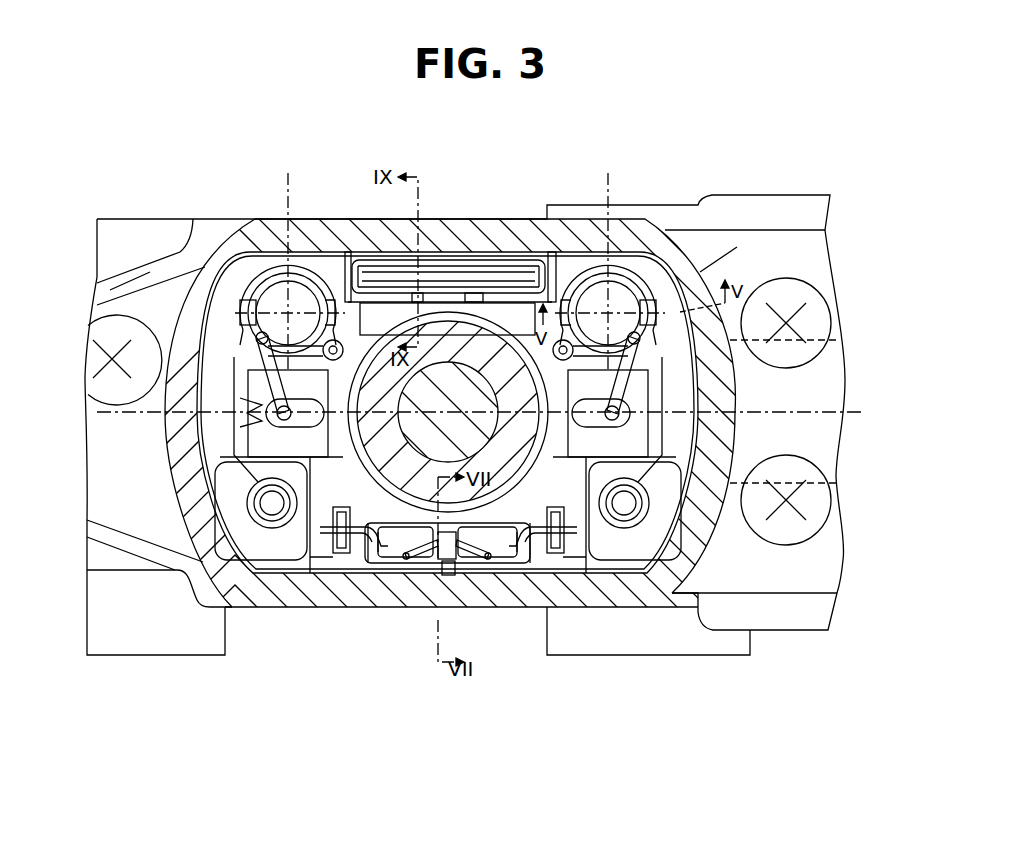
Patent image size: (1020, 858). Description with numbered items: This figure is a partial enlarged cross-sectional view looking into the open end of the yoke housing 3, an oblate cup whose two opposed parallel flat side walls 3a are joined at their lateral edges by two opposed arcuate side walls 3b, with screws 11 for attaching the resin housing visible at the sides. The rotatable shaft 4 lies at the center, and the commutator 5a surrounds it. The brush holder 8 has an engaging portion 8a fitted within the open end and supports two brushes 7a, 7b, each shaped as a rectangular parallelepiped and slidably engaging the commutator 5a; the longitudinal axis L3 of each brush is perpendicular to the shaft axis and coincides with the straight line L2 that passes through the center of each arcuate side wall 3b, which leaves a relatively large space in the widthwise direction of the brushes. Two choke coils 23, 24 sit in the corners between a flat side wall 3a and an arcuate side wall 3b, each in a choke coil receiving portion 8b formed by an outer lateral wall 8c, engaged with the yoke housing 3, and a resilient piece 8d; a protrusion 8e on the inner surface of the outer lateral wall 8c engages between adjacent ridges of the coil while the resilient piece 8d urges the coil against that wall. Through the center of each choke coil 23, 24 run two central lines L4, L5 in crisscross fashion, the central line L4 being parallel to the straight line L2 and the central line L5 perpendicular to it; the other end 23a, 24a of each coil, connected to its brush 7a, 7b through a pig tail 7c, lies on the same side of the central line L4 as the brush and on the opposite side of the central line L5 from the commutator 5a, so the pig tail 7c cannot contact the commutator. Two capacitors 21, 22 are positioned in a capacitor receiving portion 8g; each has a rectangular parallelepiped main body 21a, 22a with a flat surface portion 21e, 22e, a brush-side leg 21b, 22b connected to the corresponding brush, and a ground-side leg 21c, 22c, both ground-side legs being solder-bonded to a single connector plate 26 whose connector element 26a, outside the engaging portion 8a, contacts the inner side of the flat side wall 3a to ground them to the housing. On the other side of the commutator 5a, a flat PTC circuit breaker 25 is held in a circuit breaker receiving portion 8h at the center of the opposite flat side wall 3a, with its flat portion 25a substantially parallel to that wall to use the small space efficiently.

The yoke housing 3 is at (780, 597).
The flat side wall 3a is at (255, 609).
The arcuate side wall 3b is at (175, 480).
The rotatable shaft 4 is at (456, 448).
The commutator 5a is at (437, 455).
The brush 7a is at (608, 428).
The brush 7b is at (284, 428).
The pig tail 7c is at (278, 378).
The brush holder 8 is at (630, 590).
The engaging portion 8a is at (320, 565).
The choke coil receiving portion 8b is at (292, 275).
The outer lateral wall 8c is at (258, 245).
The resilient piece 8d is at (335, 300).
The protrusion 8e is at (246, 277).
The capacitor receiving portion 8g is at (505, 563).
The circuit breaker receiving portion 8h is at (452, 265).
The screws 11 is at (122, 405).
The capacitor 21 is at (480, 570).
The main body 21a is at (520, 555).
The leg 21b is at (584, 532).
The leg 21c is at (470, 560).
The flat surface portion 21e is at (515, 525).
The capacitor 22 is at (420, 565).
The main body 22a is at (372, 556).
The leg 22b is at (322, 532).
The leg 22c is at (405, 560).
The flat surface portion 22e is at (385, 525).
The choke coil 23 is at (612, 273).
The other end 23a is at (668, 312).
The choke coil 24 is at (282, 268).
The other end 24a is at (212, 323).
The circuit breaker 25 is at (507, 263).
The flat portion 25a is at (452, 306).
The connector plate 26 is at (445, 577).
The connector element 26a is at (458, 577).
The straight line L2 is at (845, 412).
The longitudinal axis L3 is at (308, 430).
The central line L4 is at (423, 262).
The central line L5 is at (452, 256).